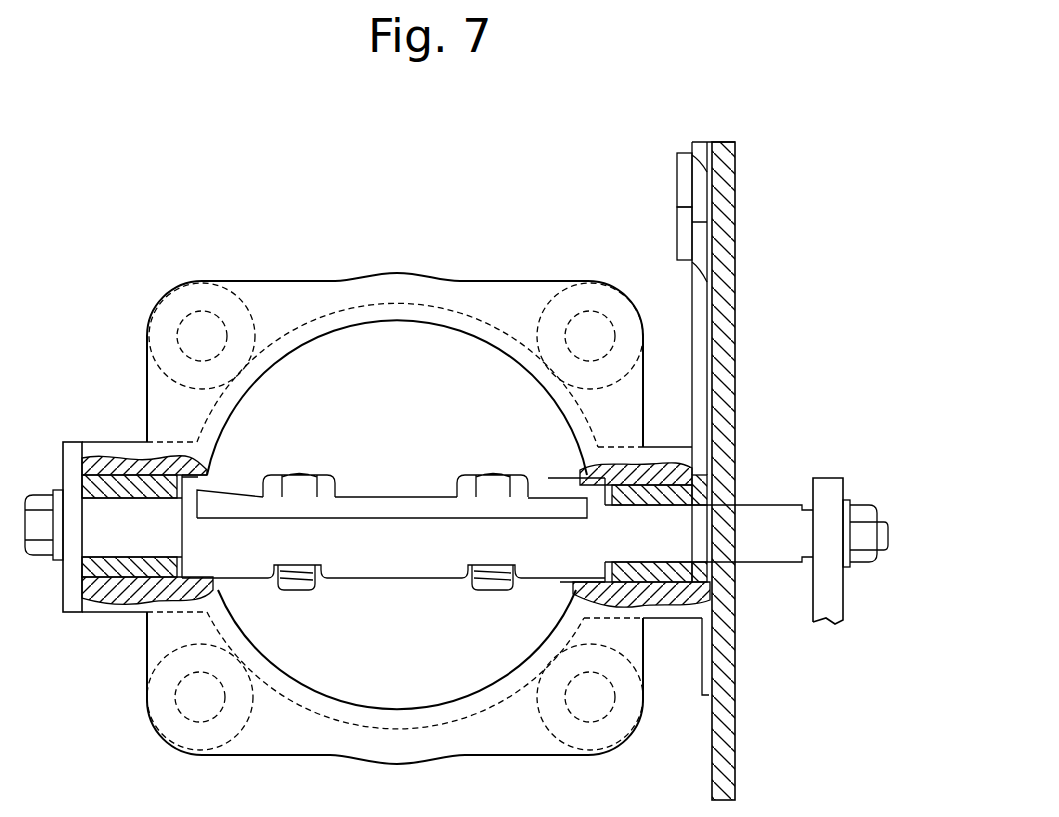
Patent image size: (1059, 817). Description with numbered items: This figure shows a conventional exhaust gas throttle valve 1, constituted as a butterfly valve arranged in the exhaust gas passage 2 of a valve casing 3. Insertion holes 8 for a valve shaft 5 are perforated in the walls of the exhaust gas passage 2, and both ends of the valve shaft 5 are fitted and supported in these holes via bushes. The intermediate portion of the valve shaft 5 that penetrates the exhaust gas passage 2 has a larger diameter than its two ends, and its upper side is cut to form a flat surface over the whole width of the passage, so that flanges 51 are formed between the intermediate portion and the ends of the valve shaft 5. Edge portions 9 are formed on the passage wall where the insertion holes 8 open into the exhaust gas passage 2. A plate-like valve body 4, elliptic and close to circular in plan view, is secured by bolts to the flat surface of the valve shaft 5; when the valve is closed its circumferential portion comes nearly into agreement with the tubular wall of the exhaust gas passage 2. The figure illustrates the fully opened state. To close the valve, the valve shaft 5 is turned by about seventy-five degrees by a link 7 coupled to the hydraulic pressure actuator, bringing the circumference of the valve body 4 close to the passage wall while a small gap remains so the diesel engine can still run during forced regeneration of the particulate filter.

The exhaust gas throttle valve 1 is at (470, 203).
The exhaust gas passage 2 is at (277, 366).
The valve casing 3 is at (533, 283).
The valve body 4 is at (398, 498).
The valve shaft 5 is at (427, 572).
The flanges 51 is at (225, 483).
The link 7 is at (840, 597).
The insertion holes 8 is at (610, 597).
The edge portions 9 is at (580, 483).